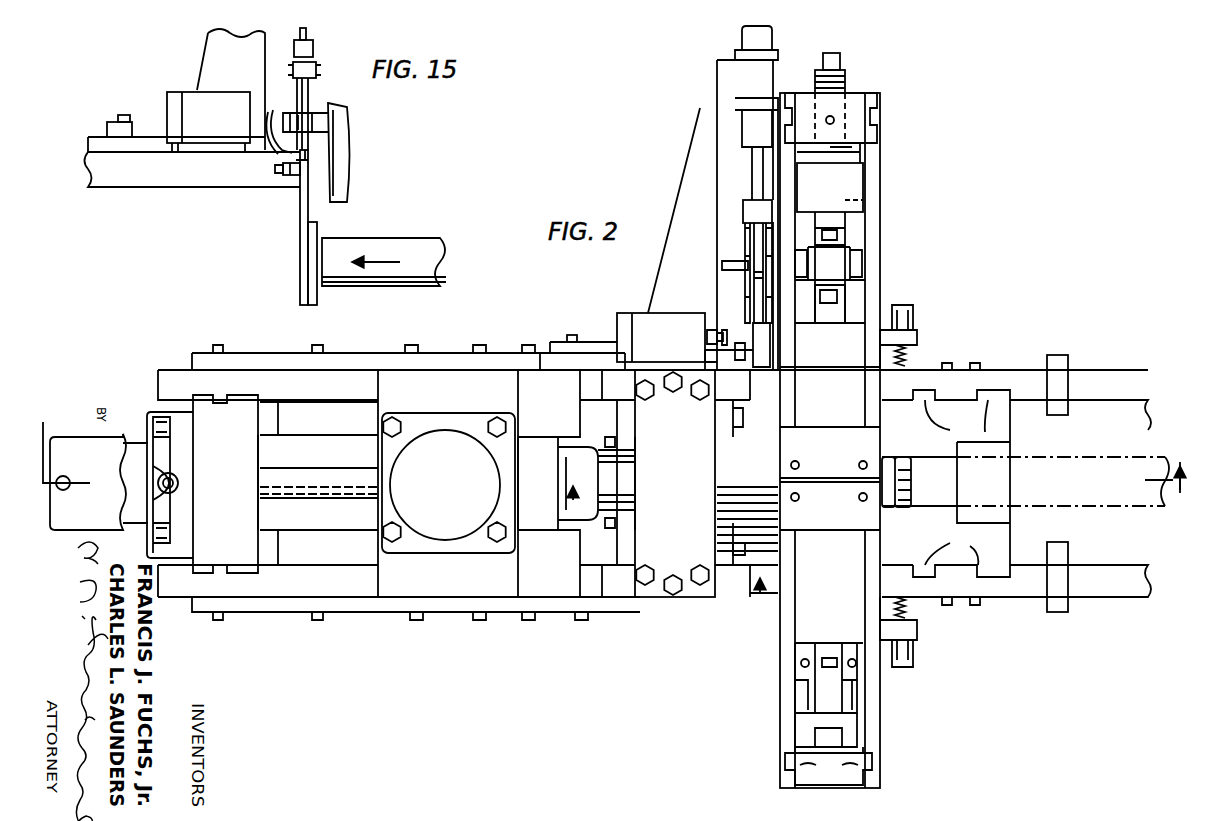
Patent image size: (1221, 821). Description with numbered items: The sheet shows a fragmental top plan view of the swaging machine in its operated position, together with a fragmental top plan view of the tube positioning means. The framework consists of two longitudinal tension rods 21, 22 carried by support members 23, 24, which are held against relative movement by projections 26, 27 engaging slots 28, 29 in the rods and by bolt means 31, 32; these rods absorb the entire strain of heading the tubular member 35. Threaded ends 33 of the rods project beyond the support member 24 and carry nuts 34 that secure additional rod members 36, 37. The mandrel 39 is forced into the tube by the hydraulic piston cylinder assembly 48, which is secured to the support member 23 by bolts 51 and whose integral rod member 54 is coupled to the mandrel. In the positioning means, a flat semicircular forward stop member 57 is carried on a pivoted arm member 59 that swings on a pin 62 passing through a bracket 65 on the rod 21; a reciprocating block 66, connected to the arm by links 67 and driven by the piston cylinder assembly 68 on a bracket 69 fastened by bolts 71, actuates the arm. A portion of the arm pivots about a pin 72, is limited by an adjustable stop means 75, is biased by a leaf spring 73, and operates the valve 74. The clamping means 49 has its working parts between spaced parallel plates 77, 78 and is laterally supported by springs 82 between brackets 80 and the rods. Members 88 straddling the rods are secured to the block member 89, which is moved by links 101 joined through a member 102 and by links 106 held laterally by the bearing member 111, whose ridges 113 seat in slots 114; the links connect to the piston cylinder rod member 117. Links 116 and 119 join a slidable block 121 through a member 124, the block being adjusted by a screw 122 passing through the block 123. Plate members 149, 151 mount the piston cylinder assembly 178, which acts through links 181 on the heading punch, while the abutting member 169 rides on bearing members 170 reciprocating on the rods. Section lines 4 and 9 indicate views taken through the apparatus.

In FIG. 2, the section line 4- 4 is at (617, 457).
In FIG. 2, the section line 9- 9 is at (639, 483).
In FIG. 15, the longitudinal tension rod 21 is at (158, 180).
In FIG. 2, the longitudinal tension rod 21 is at (335, 365).
In FIG. 2, the longitudinal tension rod 22 is at (340, 600).
In FIG. 2, the support member 23 is at (270, 455).
In FIG. 2, the support member 24 is at (985, 425).
In FIG. 2, the projection 26 is at (230, 432).
In FIG. 2, the projection 27 is at (956, 482).
In FIG. 2, the slot 28 is at (253, 393).
In FIG. 2, the slot 29 is at (990, 390).
In FIG. 2, the bolt means 31 is at (217, 343).
In FIG. 2, the bolt means 32 is at (947, 362).
In FIG. 2, the threaded end 33 is at (1068, 368).
In FIG. 2, the nut 34 is at (1058, 355).
In FIG. 15, the tubular member 35 is at (392, 238).
In FIG. 2, the tubular member 35 is at (1110, 458).
In FIG. 2, the additional rod member 36 is at (1118, 372).
In FIG. 2, the additional rod member 37 is at (1110, 595).
In FIG. 2, the mandrel 39 is at (908, 505).
In FIG. 2, the hydraulic piston cylinder assembly 48 is at (80, 435).
In FIG. 2, the clamping means 49 is at (862, 330).
In FIG. 2, the bolt 51 is at (170, 432).
In FIG. 2, the rod member 54 is at (305, 480).
In FIG. 15, the forward stop member 57 is at (298, 232).
In FIG. 2, the forward stop member 57 is at (772, 350).
In FIG. 15, the pivoted arm member 59 is at (296, 262).
In FIG. 2, the pivoted arm member 59 is at (775, 333).
In FIG. 15, the pin 62 is at (272, 128).
In FIG. 15, the bracket 65 is at (290, 148).
In FIG. 2, the bracket 65 is at (748, 340).
In FIG. 15, the block 66 is at (313, 45).
In FIG. 2, the block 66 is at (743, 210).
In FIG. 15, the link 67 is at (310, 95).
In FIG. 2, the piston cylinder assembly 68 is at (742, 125).
In FIG. 15, the bracket 69 is at (210, 46).
In FIG. 2, the bracket 69 is at (705, 215).
In FIG. 15, the bolt 71 is at (118, 118).
In FIG. 2, the bolt 71 is at (568, 332).
In FIG. 15, the pin 72 is at (312, 207).
In FIG. 15, the leaf spring 73 is at (302, 168).
In FIG. 15, the valve 74 is at (190, 105).
In FIG. 2, the valve 74 is at (637, 310).
In FIG. 15, the adjustable stop means 75 is at (278, 178).
In FIG. 15, the parallel plate 77 is at (340, 122).
In FIG. 2, the parallel plate 77 is at (780, 772).
In FIG. 2, the parallel plate 78 is at (880, 778).
In FIG. 2, the bracket 80 is at (915, 315).
In FIG. 2, the spring 82 is at (908, 348).
In FIG. 2, the member 88 is at (805, 403).
In FIG. 2, the block member 89 is at (800, 620).
In FIG. 2, the link 101 is at (858, 680).
In FIG. 2, the member 102 is at (825, 652).
In FIG. 2, the link 106 is at (855, 727).
In FIG. 2, the bearing member 111 is at (852, 776).
In FIG. 2, the ridge 113 is at (828, 766).
In FIG. 2, the slot 114 is at (872, 762).
In FIG. 2, the link 116 is at (857, 263).
In FIG. 2, the piston cylinder rod member 117 is at (820, 700).
In FIG. 2, the link 119 is at (855, 223).
In FIG. 2, the slidable block 121 is at (855, 177).
In FIG. 2, the screw 122 is at (835, 58).
In FIG. 2, the block 123 is at (855, 97).
In FIG. 2, the member 124 is at (850, 295).
In FIG. 2, the plate member 149 is at (425, 353).
In FIG. 2, the plate member 151 is at (378, 615).
In FIG. 2, the abutting member 169 is at (670, 568).
In FIG. 2, the bearing member 170 is at (730, 383).
In FIG. 2, the piston cylinder assembly 178 is at (440, 435).
In FIG. 2, the link 181 is at (368, 368).